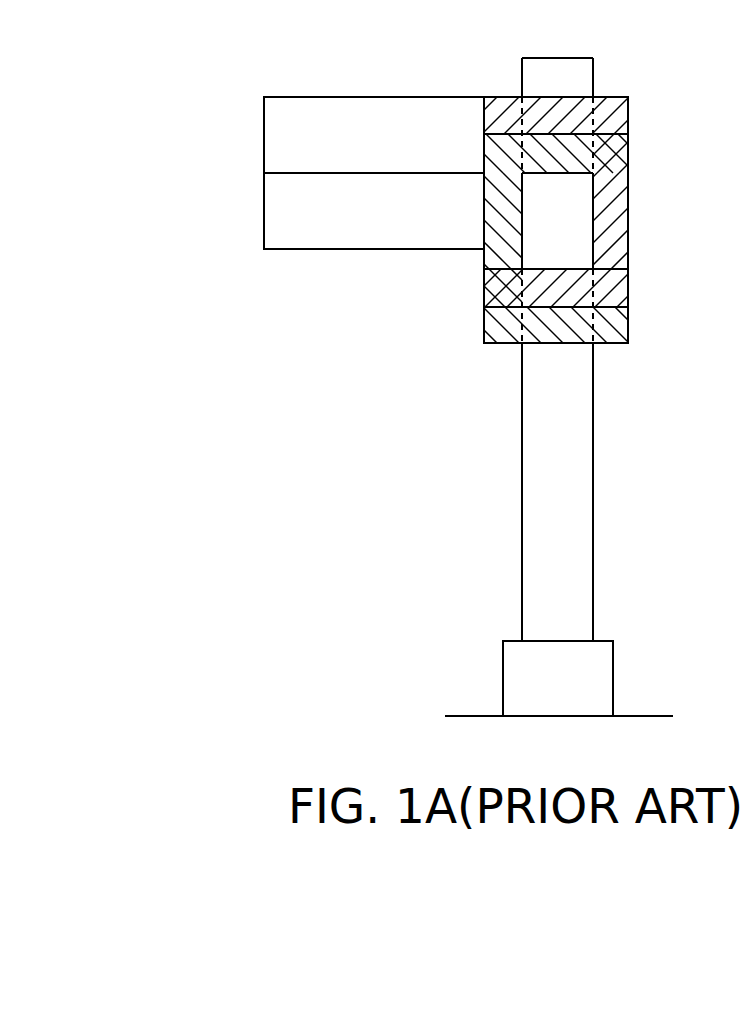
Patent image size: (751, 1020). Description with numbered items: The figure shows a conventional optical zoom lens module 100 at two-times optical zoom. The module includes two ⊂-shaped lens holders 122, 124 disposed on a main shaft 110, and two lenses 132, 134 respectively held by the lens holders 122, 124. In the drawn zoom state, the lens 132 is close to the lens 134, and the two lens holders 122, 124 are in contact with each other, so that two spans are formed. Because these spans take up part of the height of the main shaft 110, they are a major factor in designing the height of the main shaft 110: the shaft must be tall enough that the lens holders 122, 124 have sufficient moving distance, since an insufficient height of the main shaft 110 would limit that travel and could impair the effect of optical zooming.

The optical zoom lens module 100 is at (260, 712).
The main shaft 110 is at (583, 80).
The lens holder 122 is at (618, 118).
The lens holder 124 is at (620, 325).
The lens 132 is at (272, 140).
The lens 134 is at (272, 206).